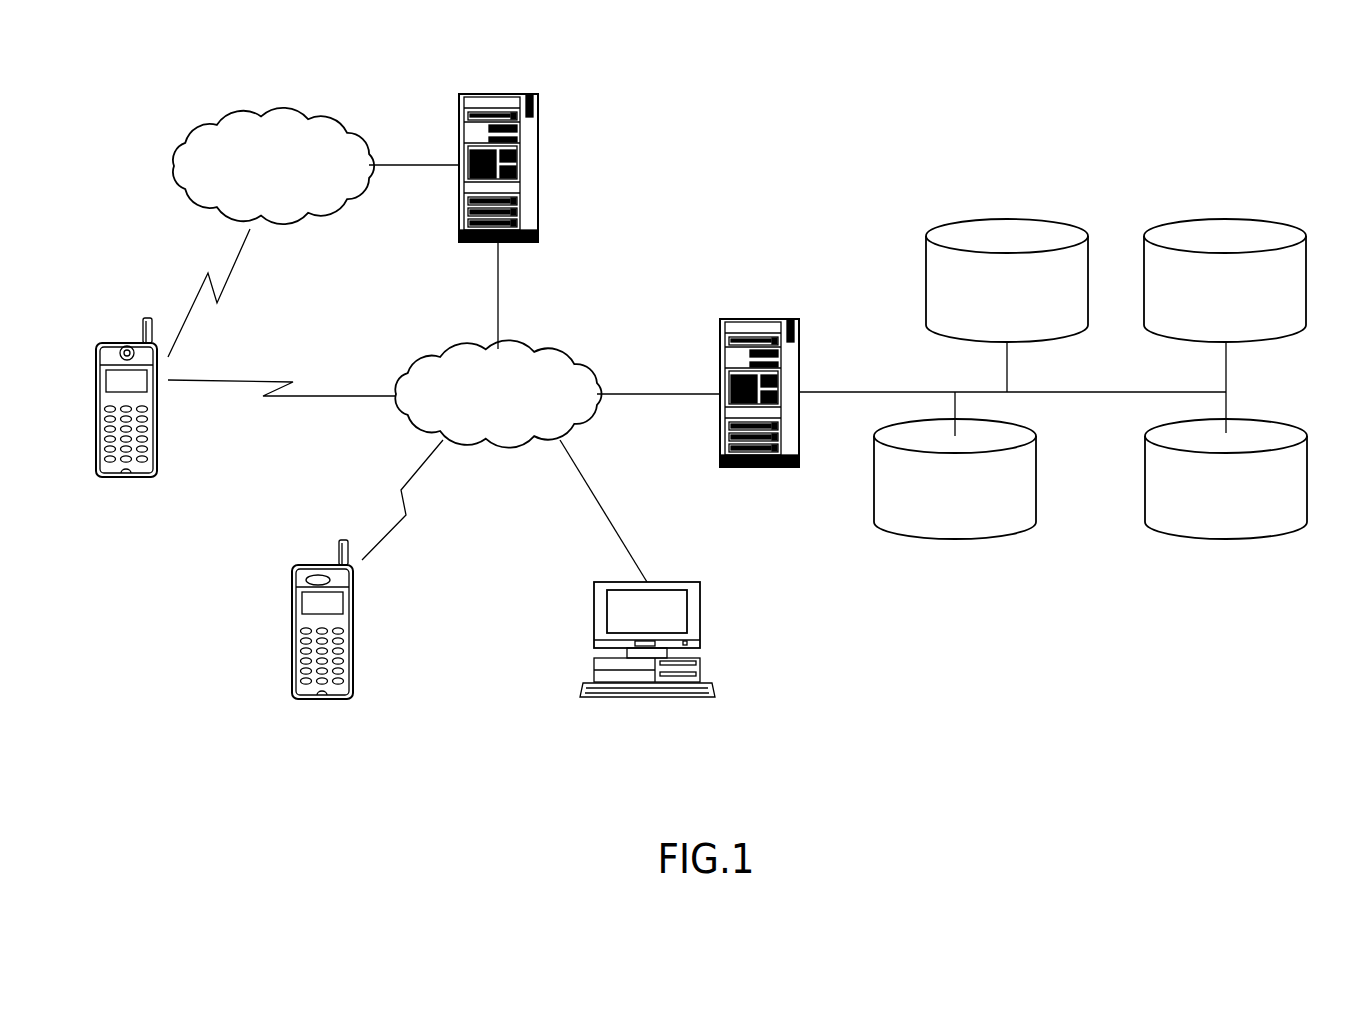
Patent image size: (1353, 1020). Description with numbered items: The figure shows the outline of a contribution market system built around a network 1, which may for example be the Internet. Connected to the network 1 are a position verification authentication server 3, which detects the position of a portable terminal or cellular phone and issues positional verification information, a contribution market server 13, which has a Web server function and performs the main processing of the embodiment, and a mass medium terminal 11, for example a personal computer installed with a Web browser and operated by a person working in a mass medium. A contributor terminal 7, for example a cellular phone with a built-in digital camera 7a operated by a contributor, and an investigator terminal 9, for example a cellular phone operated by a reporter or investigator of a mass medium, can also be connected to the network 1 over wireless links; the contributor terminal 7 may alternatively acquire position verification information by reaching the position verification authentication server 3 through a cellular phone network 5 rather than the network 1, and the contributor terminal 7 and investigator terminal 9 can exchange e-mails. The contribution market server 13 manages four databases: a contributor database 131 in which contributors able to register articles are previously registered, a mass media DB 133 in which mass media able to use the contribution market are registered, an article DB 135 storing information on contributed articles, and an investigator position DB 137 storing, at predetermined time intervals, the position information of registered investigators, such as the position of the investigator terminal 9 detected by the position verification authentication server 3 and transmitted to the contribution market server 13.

The network 1 is at (586, 360).
The position verification authentication server 3 is at (538, 160).
The cellular phone network 5 is at (364, 128).
The contributor terminal 7 is at (157, 421).
The digital camera 7a is at (118, 358).
The investigator terminal 9 is at (348, 617).
The mass medium terminal 11 is at (700, 616).
The contribution market server 13 is at (798, 362).
The contributor database 131 is at (1064, 223).
The mass media DB 133 is at (1282, 223).
The article DB 135 is at (1012, 422).
The investigator position DB 137 is at (1283, 422).